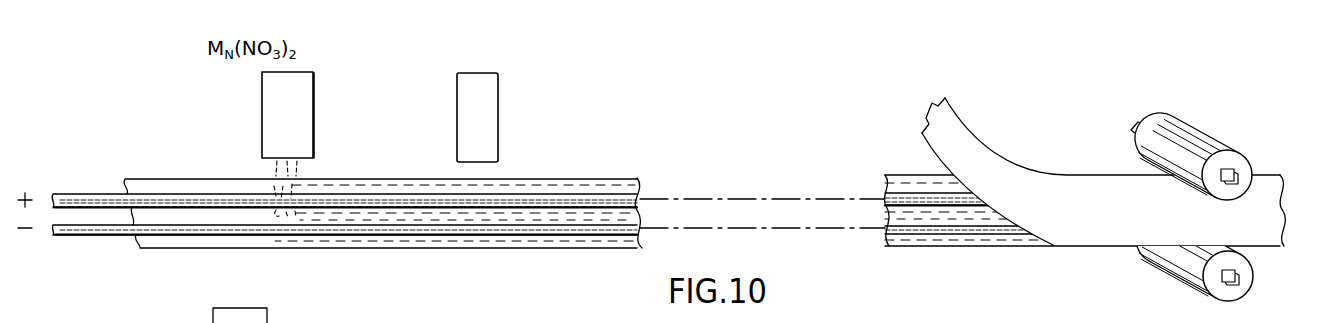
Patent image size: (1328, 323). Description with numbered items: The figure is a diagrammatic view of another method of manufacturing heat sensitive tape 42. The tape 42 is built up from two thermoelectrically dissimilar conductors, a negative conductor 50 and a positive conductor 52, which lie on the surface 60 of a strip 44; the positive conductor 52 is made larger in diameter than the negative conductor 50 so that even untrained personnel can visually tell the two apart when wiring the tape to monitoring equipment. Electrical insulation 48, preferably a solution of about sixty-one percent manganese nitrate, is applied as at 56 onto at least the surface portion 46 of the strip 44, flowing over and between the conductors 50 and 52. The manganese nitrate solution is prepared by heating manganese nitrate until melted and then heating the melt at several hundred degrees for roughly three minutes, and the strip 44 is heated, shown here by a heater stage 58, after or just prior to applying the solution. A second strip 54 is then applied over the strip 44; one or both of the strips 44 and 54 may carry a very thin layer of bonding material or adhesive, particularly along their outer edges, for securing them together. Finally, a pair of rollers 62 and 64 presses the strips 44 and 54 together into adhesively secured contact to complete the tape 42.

The heat sensitive tape 42 is at (1257, 251).
The strip 44 is at (217, 244).
The surface portion 46 is at (523, 217).
The electrical insulation 48 is at (297, 172).
The negative conductor 50 is at (98, 237).
The positive conductor 52 is at (80, 193).
The second strip 54 is at (955, 132).
The application location 56 is at (305, 110).
The heater 58 is at (500, 93).
The surface 60 is at (199, 186).
The roller 62 is at (1197, 132).
The roller 64 is at (1178, 258).